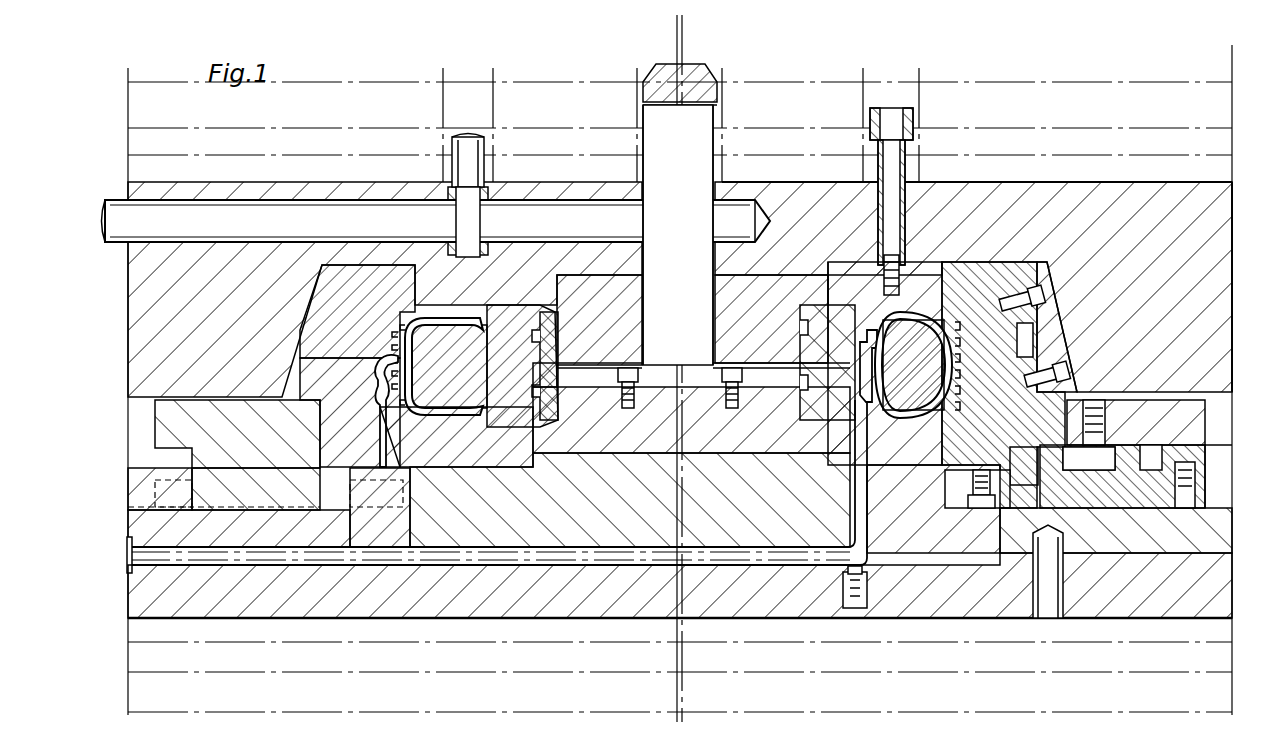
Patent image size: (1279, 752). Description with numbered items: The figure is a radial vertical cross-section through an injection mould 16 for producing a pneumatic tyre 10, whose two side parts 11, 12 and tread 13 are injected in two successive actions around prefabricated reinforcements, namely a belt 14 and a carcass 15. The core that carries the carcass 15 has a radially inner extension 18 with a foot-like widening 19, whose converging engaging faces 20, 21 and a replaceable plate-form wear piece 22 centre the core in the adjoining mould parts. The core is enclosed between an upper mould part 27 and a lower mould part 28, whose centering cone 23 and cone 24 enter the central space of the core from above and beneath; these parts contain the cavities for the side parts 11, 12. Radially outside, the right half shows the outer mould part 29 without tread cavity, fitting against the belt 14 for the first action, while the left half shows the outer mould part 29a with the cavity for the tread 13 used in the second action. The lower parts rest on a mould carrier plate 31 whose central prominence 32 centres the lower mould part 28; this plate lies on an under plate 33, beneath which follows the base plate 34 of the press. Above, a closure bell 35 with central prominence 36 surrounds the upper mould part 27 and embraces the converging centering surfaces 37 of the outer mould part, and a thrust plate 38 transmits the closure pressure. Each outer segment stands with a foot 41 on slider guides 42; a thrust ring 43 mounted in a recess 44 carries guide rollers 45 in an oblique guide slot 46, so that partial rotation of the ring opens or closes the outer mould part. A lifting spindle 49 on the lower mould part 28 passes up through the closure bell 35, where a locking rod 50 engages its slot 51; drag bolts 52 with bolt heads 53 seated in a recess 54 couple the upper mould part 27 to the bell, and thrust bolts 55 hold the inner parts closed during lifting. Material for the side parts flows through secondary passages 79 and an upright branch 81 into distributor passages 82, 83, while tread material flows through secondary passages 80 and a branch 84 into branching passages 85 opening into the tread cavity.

The pneumatic tyre 10 is at (392, 328).
The side part 11 is at (490, 310).
The side part 12 is at (482, 445).
The tread 13 is at (397, 312).
The belt 14 is at (420, 365).
The carcass 15 is at (425, 312).
The injection mould 16 is at (400, 722).
The extension 18 is at (562, 345).
The foot-like widening 19 is at (566, 492).
The engaging face 20 is at (550, 300).
The engaging face 21 is at (555, 360).
The wear piece 22 is at (575, 320).
The centering cone 23 is at (728, 342).
The cone 24 is at (785, 392).
The upper mould part 27 is at (776, 311).
The lower mould part 28 is at (731, 438).
The outer mould part 29 is at (1041, 426).
The outer mould part 29a is at (210, 445).
The mould carrier plate 31 is at (761, 504).
The central prominence 32 is at (652, 562).
The under plate 33 is at (1218, 588).
The base plate 34 is at (1218, 715).
The closure bell 35 is at (1208, 224).
The central prominence 36 is at (790, 272).
The centering surfaces 37 is at (1060, 310).
The thrust plate 38 is at (1208, 70).
The foot 41 is at (1222, 360).
The slider guides 42 is at (1222, 498).
The thrust ring 43 is at (1148, 505).
The recess 44 is at (1030, 510).
The guide rollers 45 is at (1145, 430).
The guide slot 46 is at (1148, 452).
The lifting spindle 49 is at (705, 82).
The locking rod 50 is at (340, 215).
The slot 51 is at (703, 140).
The drag bolts 52 is at (888, 125).
The bolt head 53 is at (912, 120).
The recess 54 is at (935, 198).
The thrust bolts 55 is at (470, 165).
The secondary passages 79 is at (775, 562).
The secondary passages 80 is at (445, 567).
The branch 81 is at (862, 544).
The distributor passage 82 is at (880, 400).
The distributor passage 83 is at (870, 338).
The branch 84 is at (380, 445).
The branching passages 85 is at (395, 372).